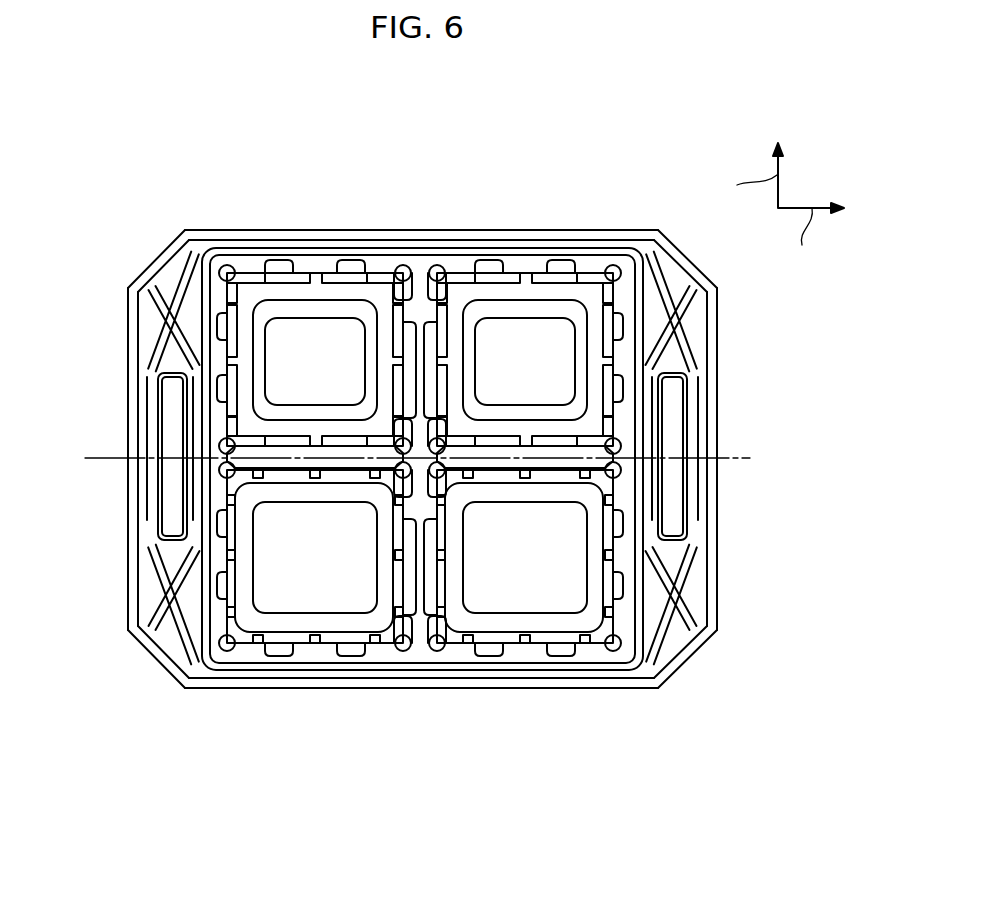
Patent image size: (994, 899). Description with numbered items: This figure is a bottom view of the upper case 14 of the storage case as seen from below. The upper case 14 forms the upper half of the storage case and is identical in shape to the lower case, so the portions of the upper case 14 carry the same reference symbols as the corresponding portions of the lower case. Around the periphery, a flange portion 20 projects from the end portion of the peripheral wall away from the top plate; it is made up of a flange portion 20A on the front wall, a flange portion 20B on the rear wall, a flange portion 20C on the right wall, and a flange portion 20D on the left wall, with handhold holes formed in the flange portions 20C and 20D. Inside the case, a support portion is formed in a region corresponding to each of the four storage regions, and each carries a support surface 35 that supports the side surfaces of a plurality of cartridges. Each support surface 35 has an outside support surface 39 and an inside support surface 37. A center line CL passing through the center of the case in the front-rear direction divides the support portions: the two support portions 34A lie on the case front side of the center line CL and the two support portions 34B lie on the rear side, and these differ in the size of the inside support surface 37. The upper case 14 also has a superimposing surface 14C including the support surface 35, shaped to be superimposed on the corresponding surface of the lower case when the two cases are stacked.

The upper case 14 is at (650, 187).
The superimposing surface 14C is at (330, 590).
The flange portion 20 is at (720, 390).
The flange portion 20A is at (525, 229).
The flange portion 20B is at (523, 689).
The flange portion 20C is at (127, 397).
The flange portion 20D is at (717, 526).
The support portion 34A is at (245, 645).
The support portion 34B is at (463, 273).
The support surface 35 is at (280, 307).
The inside support surface 37 is at (287, 348).
The outside support surface 39 is at (250, 292).
The center line CL is at (113, 466).